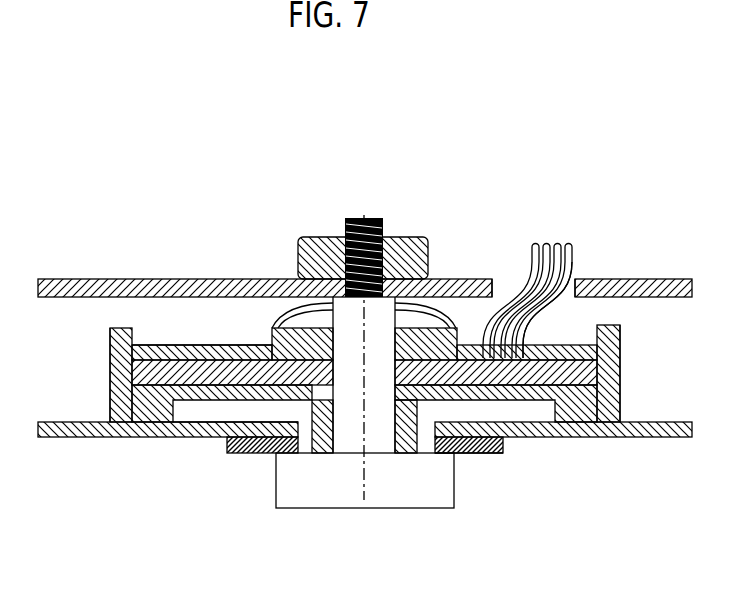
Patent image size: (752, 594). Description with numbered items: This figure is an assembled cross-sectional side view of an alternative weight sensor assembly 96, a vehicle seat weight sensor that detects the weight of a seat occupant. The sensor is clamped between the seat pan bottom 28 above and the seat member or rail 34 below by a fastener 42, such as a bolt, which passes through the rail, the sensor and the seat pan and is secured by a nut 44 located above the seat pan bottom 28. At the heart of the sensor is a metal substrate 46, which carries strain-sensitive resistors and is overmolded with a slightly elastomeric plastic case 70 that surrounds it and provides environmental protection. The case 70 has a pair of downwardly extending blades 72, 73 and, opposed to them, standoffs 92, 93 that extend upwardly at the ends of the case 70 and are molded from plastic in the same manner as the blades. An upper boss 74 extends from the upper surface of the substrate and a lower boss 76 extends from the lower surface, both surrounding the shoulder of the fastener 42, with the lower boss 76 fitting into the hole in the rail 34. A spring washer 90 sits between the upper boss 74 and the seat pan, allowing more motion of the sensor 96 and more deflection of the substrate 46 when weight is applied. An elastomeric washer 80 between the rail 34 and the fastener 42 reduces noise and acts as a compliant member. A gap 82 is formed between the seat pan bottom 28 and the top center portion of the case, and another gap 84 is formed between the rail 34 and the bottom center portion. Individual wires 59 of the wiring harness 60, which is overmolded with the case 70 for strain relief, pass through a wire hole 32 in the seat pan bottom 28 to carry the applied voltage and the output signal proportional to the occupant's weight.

The seat pan bottom 28 is at (65, 279).
The wire hole 32 is at (507, 283).
The seat member or rail 34 is at (40, 438).
The fastener 42 is at (410, 508).
The nut 44 is at (298, 251).
The metal substrate 46 is at (587, 373).
The wires 59 is at (542, 248).
The wiring harness 60 is at (575, 250).
The case 70 is at (622, 382).
The blade 72 is at (110, 406).
The blade 73 is at (620, 397).
The upper boss 74 is at (270, 332).
The lower boss 76 is at (506, 432).
The elastomeric washer 80 is at (477, 454).
The gap 82 is at (218, 327).
The gap 84 is at (197, 410).
The spring washer 90 is at (446, 300).
The standoff 92 is at (110, 337).
The standoff 93 is at (620, 332).
The alternative weight sensor assembly 96 is at (110, 363).